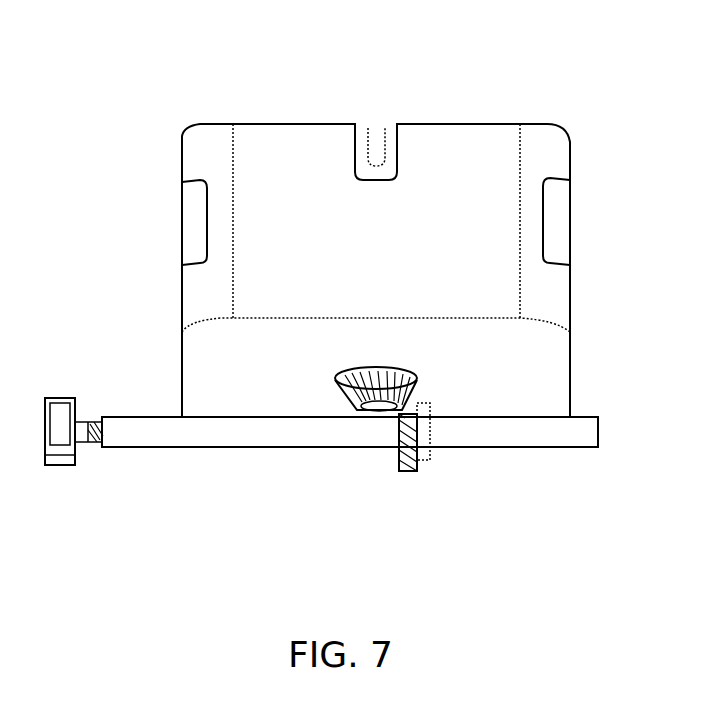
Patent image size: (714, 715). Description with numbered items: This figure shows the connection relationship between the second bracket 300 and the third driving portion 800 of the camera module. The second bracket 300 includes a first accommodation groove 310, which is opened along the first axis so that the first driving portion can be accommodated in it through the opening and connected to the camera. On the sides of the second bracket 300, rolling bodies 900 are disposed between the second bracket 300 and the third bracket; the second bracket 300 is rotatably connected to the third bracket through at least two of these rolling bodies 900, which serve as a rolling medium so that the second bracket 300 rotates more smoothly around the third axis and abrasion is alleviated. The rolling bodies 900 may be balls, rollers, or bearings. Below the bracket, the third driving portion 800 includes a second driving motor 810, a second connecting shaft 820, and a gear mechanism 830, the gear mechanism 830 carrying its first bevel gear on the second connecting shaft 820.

The second bracket 300 is at (553, 137).
The first accommodation groove 310 is at (380, 137).
The rolling bodies 900 is at (552, 195).
The third driving portion 800 is at (321, 491).
The second driving motor 810 is at (95, 445).
The second connecting shaft 820 is at (543, 428).
The gear mechanism 830 is at (407, 446).